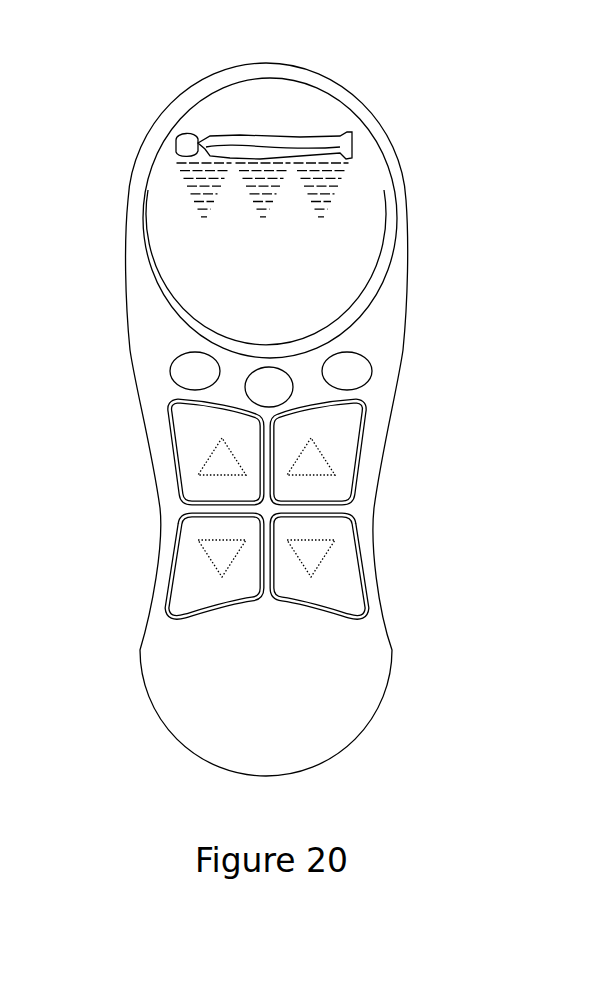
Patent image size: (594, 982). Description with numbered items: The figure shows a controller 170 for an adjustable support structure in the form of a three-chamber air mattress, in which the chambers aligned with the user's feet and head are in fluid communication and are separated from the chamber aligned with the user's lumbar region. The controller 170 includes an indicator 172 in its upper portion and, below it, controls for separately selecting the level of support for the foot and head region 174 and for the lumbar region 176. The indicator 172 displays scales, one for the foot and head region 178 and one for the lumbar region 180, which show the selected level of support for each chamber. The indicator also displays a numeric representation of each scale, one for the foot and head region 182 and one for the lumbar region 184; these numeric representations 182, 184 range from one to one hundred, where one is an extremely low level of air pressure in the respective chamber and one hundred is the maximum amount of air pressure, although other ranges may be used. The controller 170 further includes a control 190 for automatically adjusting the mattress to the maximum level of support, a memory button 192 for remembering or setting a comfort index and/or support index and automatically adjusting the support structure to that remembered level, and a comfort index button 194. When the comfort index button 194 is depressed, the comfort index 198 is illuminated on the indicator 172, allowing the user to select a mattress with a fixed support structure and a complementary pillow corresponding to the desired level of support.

The controller 170 is at (372, 746).
The indicator 172 is at (360, 125).
The foot and head region control 174 is at (178, 493).
The lumbar region control 176 is at (355, 490).
The foot and head region scale 178 is at (203, 200).
The lumbar region scale 180 is at (263, 207).
The foot and head region numeric representation 182 is at (362, 257).
The lumbar region numeric representation 184 is at (207, 282).
The automatic adjustment control 190 is at (367, 383).
The memory button 192 is at (170, 373).
The comfort index button 194 is at (290, 373).
The comfort index 198 is at (279, 300).